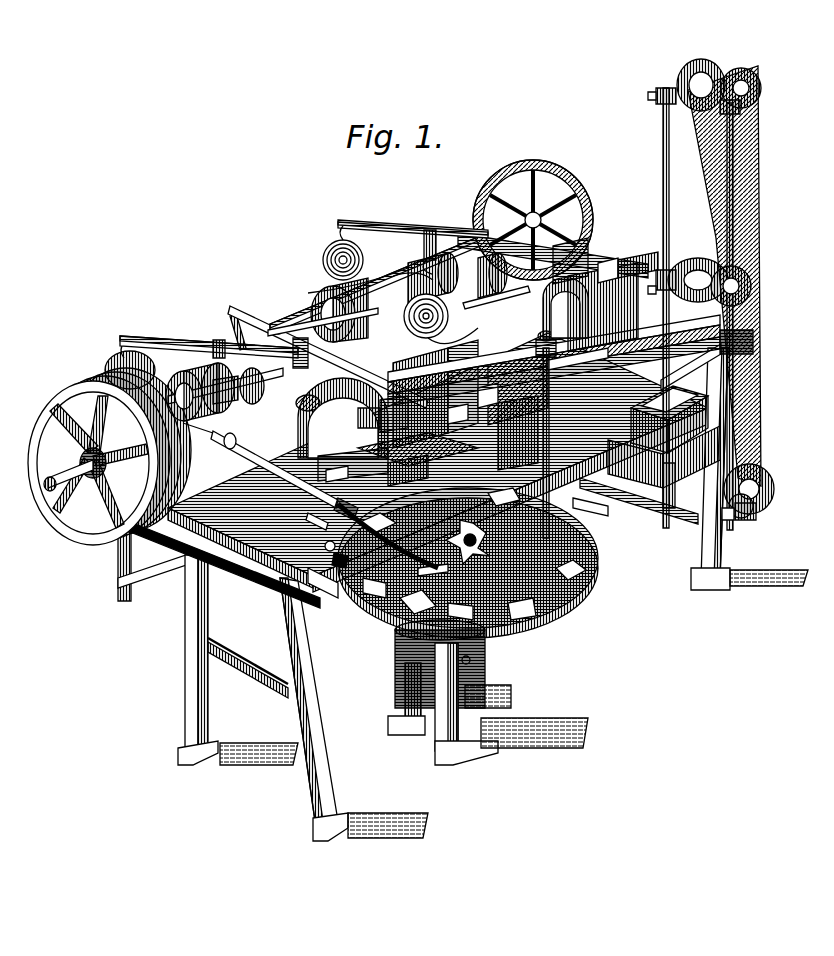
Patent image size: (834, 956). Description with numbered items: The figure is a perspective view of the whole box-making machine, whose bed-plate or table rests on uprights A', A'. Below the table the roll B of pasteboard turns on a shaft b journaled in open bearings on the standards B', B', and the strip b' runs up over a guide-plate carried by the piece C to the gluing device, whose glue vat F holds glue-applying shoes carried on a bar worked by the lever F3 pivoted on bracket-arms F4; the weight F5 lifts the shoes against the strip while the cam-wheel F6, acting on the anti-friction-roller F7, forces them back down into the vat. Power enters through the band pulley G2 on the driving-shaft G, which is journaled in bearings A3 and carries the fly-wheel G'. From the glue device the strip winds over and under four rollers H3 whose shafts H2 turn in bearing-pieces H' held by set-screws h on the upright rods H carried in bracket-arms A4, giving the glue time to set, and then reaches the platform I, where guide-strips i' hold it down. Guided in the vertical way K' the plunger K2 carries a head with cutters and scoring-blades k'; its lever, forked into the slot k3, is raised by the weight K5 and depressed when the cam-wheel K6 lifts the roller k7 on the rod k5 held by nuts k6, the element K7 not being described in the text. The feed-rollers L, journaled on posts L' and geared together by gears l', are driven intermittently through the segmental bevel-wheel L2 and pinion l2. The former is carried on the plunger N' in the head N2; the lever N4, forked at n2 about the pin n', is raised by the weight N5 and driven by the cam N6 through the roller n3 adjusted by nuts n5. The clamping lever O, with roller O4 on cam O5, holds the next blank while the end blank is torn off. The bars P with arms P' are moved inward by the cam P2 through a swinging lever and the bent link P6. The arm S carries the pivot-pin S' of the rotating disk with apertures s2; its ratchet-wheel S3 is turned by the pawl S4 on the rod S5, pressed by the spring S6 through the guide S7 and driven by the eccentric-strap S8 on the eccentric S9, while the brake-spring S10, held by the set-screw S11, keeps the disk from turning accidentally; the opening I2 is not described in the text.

The uprights A' is at (455, 592).
The bearings A3 is at (470, 225).
The bracket-arms A4 is at (745, 326).
The roll B is at (438, 520).
The standards B' is at (488, 704).
The shaft b is at (483, 663).
The strip b' is at (733, 276).
The piece C is at (606, 478).
The glue-containing vat F is at (652, 395).
The lever F3 is at (565, 308).
The bracket-arms F4 is at (470, 300).
The weight F5 is at (408, 322).
The cam-wheel F6 is at (428, 250).
The anti-friction-roller F7 is at (448, 340).
The driving-shaft G is at (401, 274).
The fly-wheel G' is at (542, 220).
The band pulley G2 is at (62, 478).
The upright parallel rods H is at (715, 309).
The bearing-pieces H' is at (708, 296).
The shafts H2 is at (755, 70).
The rollers H3 is at (722, 58).
The set-screw h is at (640, 88).
The platform I is at (640, 448).
The chute I2 is at (585, 502).
The guide-strips i' is at (578, 367).
The vertical way K' is at (638, 265).
The reciprocating plunger K2 is at (600, 242).
The weight K5 is at (318, 248).
The cam-wheel K6 is at (358, 282).
The lever K7 is at (383, 212).
The slot k3 is at (600, 256).
The rod k5 is at (416, 226).
The nuts k6 is at (414, 250).
The roller k7 is at (403, 270).
The scoring-blades k' is at (554, 360).
The feed-rollers L is at (372, 418).
The posts L' is at (511, 434).
The bevel-wheel L2 is at (310, 298).
The pinion l2 is at (352, 315).
The gears l' is at (488, 396).
The plunger N' is at (322, 390).
The head N2 is at (378, 414).
The lever N4 is at (236, 336).
The weight N5 is at (158, 358).
The cam N6 is at (228, 395).
The pin n' is at (456, 408).
The forked end n2 is at (212, 332).
The roller n3 is at (250, 376).
The nuts n5 is at (200, 333).
The lever O is at (248, 292).
The roller O4 is at (270, 314).
The cam O5 is at (312, 354).
The horizontally-reciprocating bars P is at (353, 465).
The arms P' is at (336, 481).
The cam P2 is at (260, 390).
The link P6 is at (363, 429).
The arm S is at (451, 564).
The pivot-pin S' is at (353, 511).
The ratchet-wheel S3 is at (312, 525).
The pawl S4 is at (500, 542).
The reciprocating rod S5 is at (236, 445).
The spring S6 is at (307, 549).
The guide S7 is at (322, 563).
The eccentric-strap S8 is at (232, 432).
The eccentric S9 is at (200, 432).
The brake-spring S10 is at (325, 578).
The set-screw S11 is at (433, 577).
The rectangular apertures s2 is at (393, 588).